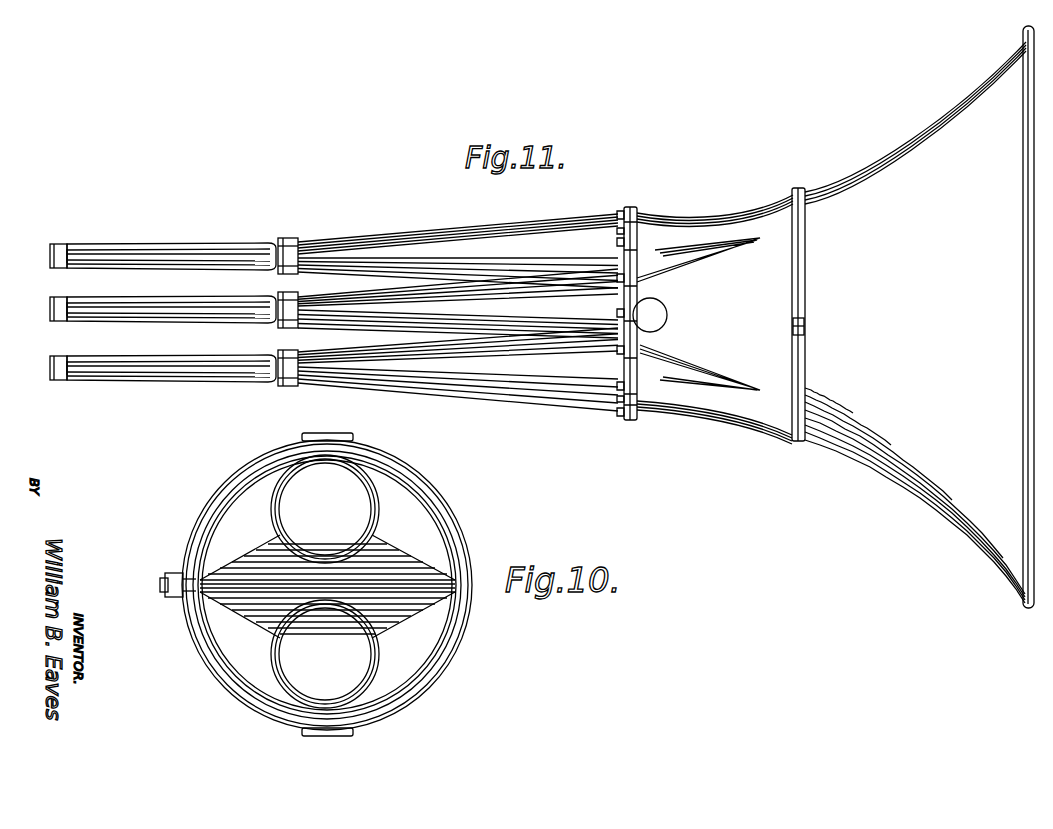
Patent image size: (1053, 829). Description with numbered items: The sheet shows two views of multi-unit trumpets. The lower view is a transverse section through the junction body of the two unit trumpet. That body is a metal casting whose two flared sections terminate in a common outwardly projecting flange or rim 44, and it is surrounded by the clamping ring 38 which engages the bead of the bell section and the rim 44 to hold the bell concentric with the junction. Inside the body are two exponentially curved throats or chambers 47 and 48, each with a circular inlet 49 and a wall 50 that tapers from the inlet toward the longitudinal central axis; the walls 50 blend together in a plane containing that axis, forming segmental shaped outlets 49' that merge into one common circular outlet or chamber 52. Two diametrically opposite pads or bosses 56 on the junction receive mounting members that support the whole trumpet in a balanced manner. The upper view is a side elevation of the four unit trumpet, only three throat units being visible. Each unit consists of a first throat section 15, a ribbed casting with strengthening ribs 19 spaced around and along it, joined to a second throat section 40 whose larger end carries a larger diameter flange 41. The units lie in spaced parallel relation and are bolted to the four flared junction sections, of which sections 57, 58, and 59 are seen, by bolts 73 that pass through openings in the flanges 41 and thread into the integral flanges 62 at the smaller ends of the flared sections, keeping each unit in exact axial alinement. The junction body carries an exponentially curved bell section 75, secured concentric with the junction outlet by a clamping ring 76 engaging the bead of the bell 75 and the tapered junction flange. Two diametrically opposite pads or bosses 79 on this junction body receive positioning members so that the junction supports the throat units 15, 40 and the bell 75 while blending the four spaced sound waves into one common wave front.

In FIG. 11, the first throat section 15 is at (132, 245).
In FIG. 11, the strengthening ribs 19 is at (102, 258).
In FIG. 11, the second throat section 40 is at (398, 240).
In FIG. 11, the flange 41 is at (620, 212).
In FIG. 11, the flanges 62 is at (637, 215).
In FIG. 11, the bolts 73 is at (618, 242).
In FIG. 11, the pads or bosses 79 is at (662, 325).
In FIG. 11, the flared section 57 is at (698, 222).
In FIG. 11, the flared section 58 is at (706, 326).
In FIG. 11, the flared section 59 is at (710, 414).
In FIG. 11, the clamping ring 76 is at (798, 280).
In FIG. 11, the bell section 75 is at (862, 168).
In FIG. 10, the clamping ring 38 is at (185, 523).
In FIG. 10, the flange or rim 44 is at (422, 486).
In FIG. 10, the throat or chamber 47 is at (237, 508).
In FIG. 10, the common circular outlet or chamber 52 is at (206, 548).
In FIG. 10, the pads or bosses 56 is at (300, 436).
In FIG. 10, the circular inlet 49 is at (311, 584).
In FIG. 10, the segmental shaped outlets 49' is at (433, 609).
In FIG. 10, the wall 50 is at (254, 596).
In FIG. 10, the throat or chamber 48 is at (236, 642).